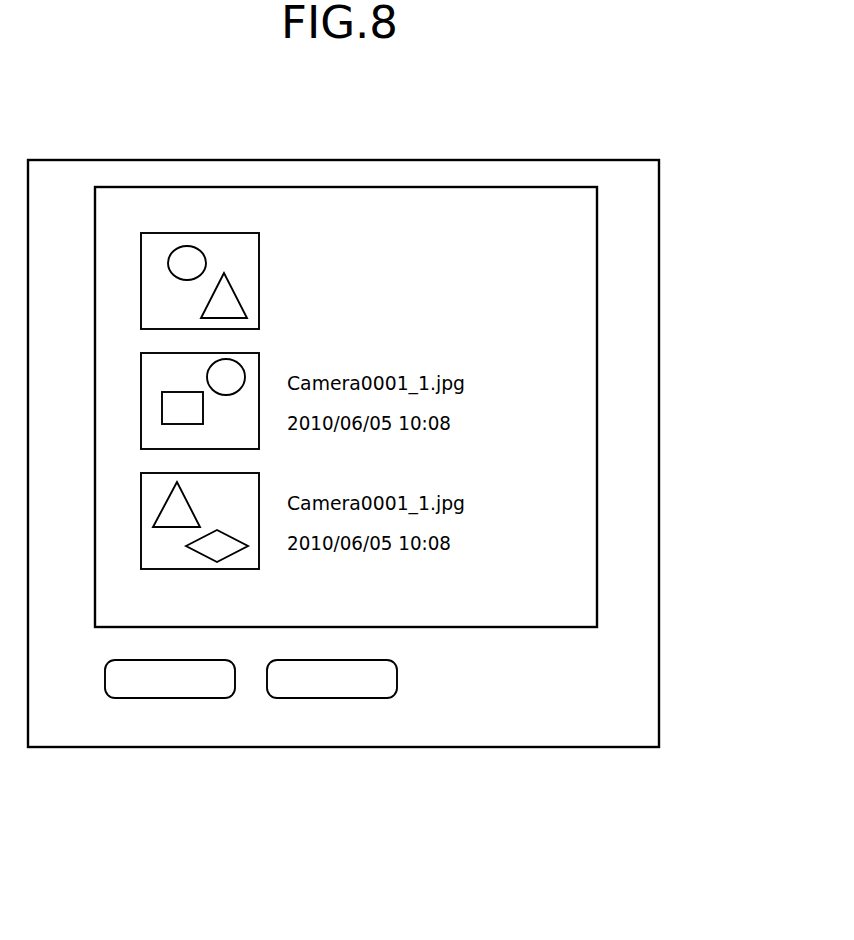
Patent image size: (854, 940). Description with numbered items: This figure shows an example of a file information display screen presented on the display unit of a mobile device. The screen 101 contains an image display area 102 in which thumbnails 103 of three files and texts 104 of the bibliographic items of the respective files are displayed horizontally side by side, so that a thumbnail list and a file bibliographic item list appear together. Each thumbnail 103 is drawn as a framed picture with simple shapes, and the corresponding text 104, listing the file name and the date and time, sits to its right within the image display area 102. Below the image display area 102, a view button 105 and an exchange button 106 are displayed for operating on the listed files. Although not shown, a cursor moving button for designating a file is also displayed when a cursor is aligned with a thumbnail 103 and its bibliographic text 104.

The screen 101 is at (335, 160).
The image display area 102 is at (438, 187).
The thumbnail 103 is at (200, 233).
The text of bibliographic item 104 is at (465, 243).
The view button 105 is at (170, 698).
The exchange button 106 is at (335, 698).